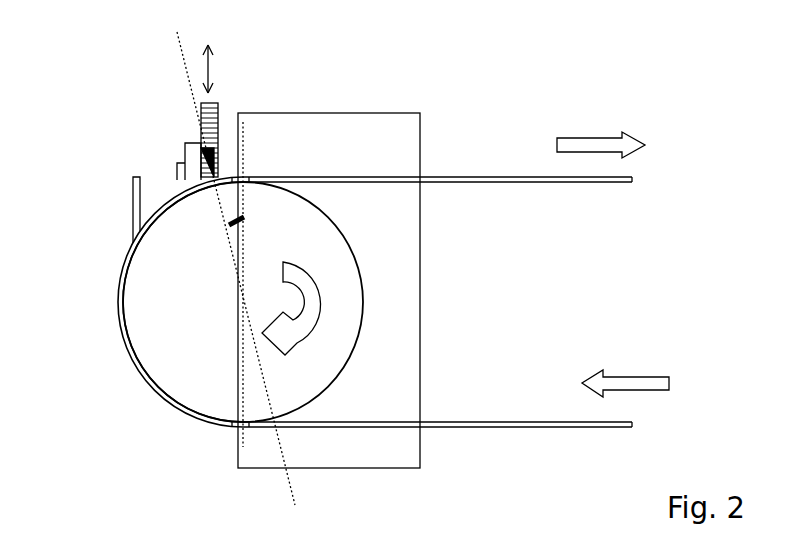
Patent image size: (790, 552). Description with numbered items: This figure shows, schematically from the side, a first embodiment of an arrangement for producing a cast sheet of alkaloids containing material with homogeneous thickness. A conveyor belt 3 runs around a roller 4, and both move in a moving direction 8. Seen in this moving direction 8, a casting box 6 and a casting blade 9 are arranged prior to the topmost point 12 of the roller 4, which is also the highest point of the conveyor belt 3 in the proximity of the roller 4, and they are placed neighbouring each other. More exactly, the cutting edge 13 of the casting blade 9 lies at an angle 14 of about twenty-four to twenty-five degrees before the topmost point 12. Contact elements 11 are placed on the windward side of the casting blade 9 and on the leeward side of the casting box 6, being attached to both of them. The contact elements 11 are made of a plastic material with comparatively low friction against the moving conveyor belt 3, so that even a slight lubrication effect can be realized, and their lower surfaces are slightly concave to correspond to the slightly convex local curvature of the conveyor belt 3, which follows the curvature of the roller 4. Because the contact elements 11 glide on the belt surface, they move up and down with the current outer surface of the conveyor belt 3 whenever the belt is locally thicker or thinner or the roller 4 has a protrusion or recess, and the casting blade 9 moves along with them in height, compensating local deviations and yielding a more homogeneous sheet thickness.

The conveyor belt 3 is at (435, 168).
The roller 4 is at (165, 357).
The casting box 6 is at (128, 198).
The moving direction 8 is at (602, 132).
The casting blade 9 is at (215, 177).
The contact elements 11 is at (193, 160).
The topmost point 12 is at (245, 172).
The cutting edge 13 is at (215, 182).
The angle 14 is at (235, 213).